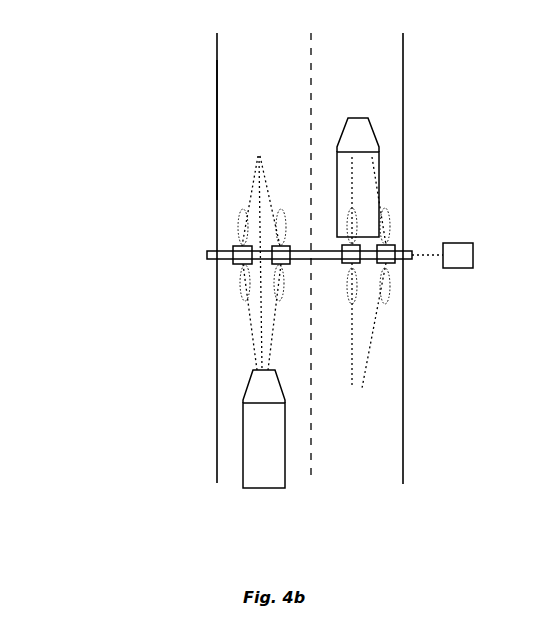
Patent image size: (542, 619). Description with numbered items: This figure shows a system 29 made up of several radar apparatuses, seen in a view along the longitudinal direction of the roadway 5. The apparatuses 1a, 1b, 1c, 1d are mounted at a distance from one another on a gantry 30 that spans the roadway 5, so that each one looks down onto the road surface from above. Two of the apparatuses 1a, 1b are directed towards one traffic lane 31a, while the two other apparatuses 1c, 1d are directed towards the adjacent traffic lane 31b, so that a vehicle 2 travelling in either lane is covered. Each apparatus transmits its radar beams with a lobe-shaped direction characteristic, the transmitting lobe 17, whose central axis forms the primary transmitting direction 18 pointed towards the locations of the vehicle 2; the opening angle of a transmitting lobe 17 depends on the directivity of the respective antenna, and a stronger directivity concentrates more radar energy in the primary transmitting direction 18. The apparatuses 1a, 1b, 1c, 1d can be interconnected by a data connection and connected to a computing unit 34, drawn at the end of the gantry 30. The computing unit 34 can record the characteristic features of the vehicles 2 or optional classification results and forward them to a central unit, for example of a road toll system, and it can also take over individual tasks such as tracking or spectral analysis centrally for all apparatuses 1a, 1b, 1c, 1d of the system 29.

The apparatus 1a is at (233, 250).
The apparatus 1b is at (275, 257).
The apparatus 1c is at (356, 258).
The apparatus 1d is at (388, 256).
The vehicle 2 is at (363, 135).
The roadway 5 is at (225, 118).
The transmitting lobe 17 is at (240, 213).
The primary transmitting direction 18 is at (255, 189).
The system 29 is at (113, 207).
The gantry 30 is at (410, 252).
The traffic lane 31a is at (254, 55).
The traffic lane 31b is at (374, 52).
The computing unit 34 is at (466, 268).